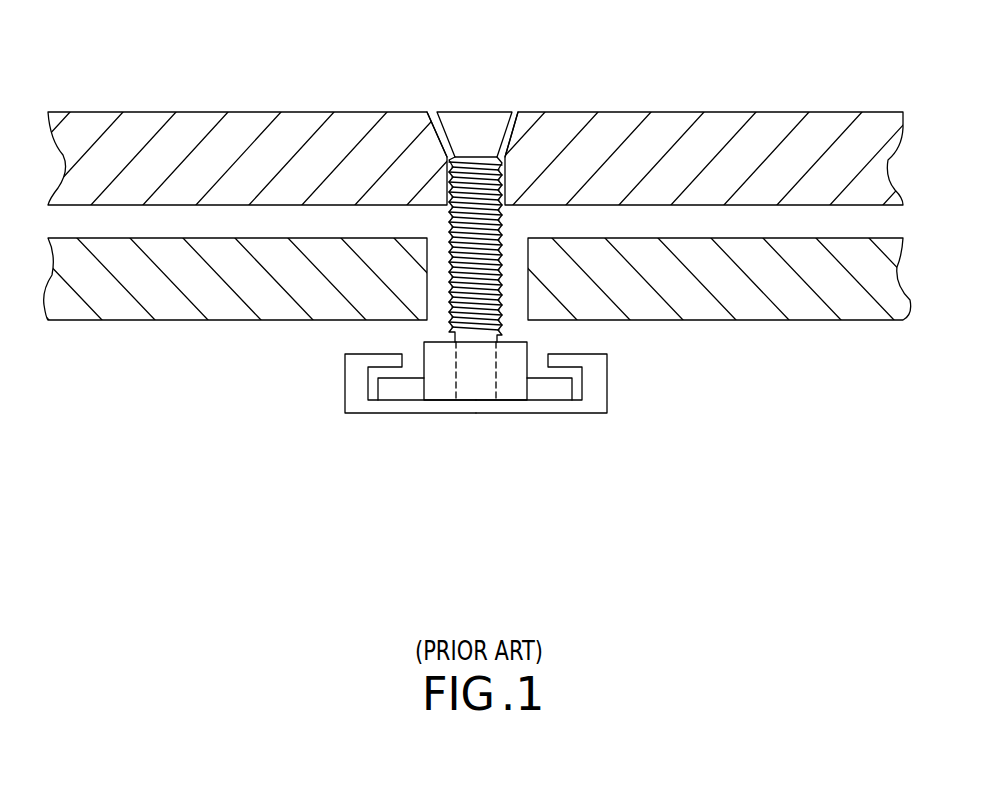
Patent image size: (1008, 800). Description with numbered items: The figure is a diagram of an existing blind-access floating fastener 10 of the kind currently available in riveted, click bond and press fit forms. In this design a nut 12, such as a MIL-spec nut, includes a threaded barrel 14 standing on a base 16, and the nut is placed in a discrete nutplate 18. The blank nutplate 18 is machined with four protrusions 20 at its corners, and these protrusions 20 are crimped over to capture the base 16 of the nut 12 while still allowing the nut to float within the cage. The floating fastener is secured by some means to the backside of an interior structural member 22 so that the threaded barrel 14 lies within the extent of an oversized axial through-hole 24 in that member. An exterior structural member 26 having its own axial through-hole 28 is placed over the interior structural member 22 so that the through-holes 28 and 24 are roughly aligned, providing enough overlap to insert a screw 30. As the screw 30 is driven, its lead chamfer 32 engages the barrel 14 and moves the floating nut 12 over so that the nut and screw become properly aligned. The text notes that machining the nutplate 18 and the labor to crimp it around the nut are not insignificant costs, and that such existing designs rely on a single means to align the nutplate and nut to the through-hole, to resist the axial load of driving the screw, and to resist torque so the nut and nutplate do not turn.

The floating fastener 10 is at (274, 440).
The nut 12 is at (499, 423).
The threaded barrel 14 is at (496, 417).
The base 16 is at (552, 392).
The nutplate 18 is at (607, 392).
The protrusions 20 is at (365, 354).
The interior structural member 22 is at (83, 296).
The oversized axial through-hole 24 is at (515, 307).
The exterior structural member 26 is at (84, 178).
The axial through-hole 28 is at (527, 95).
The screw 30 is at (483, 120).
The lead chamfer 32 is at (469, 346).